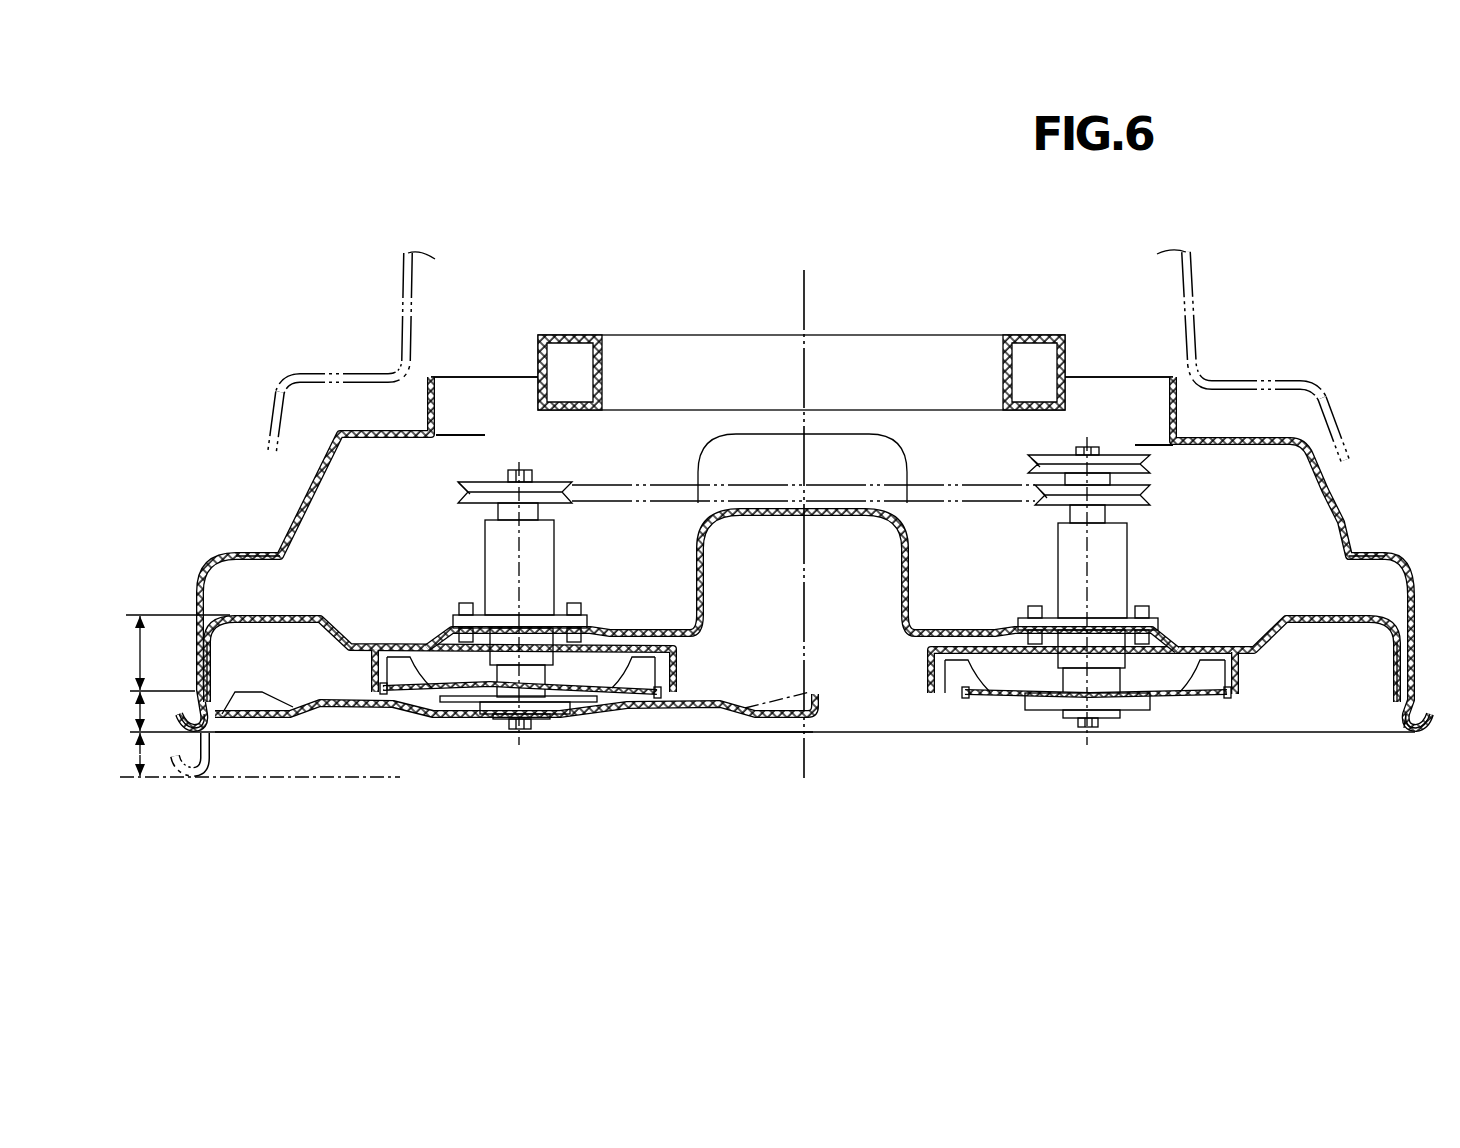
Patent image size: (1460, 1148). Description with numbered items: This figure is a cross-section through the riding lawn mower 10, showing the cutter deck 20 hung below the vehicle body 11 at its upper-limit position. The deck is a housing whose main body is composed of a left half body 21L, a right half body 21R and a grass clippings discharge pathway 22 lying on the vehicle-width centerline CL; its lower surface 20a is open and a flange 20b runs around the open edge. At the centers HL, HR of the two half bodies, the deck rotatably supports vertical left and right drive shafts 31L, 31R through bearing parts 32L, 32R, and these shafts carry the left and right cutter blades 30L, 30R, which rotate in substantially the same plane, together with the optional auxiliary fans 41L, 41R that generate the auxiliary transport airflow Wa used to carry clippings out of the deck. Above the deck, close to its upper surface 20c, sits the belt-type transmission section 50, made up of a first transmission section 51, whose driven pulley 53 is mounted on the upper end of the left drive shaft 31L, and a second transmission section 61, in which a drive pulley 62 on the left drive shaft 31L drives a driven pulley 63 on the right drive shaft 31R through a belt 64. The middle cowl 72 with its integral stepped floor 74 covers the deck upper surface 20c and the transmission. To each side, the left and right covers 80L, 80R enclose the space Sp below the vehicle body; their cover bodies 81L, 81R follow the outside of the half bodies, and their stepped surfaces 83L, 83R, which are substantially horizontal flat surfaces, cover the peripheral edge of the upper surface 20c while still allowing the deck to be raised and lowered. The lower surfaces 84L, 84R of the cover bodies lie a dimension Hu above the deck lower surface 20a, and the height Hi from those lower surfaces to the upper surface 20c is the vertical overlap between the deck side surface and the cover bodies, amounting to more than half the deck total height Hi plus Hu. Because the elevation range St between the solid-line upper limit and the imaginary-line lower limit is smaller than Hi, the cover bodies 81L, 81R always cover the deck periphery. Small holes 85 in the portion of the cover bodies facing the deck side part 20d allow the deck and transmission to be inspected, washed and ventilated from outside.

The riding lawn mower 10 is at (548, 168).
The vehicle body 11 is at (577, 332).
The cutter deck 20 is at (178, 778).
The lower surface 20a is at (363, 735).
The flange 20b is at (167, 737).
The upper surface 20c is at (290, 615).
The side part 20d is at (217, 688).
The right half body 21R is at (617, 612).
The left half body 21L is at (955, 612).
The grass clippings discharge pathway 22 is at (823, 458).
The right cutter blade 30R is at (752, 716).
The left cutter blade 30L is at (1055, 710).
The right drive shaft 31R is at (497, 508).
The left drive shaft 31L is at (1108, 510).
The right bearing part 32R is at (495, 550).
The left bearing part 32L is at (1120, 585).
The right auxiliary fan 41R is at (637, 700).
The left auxiliary fan 41L is at (978, 700).
The transmission section 50 is at (1256, 463).
The first transmission section 51 is at (1157, 462).
The driven pulley 53 is at (1054, 451).
The second transmission section 61 is at (1158, 497).
The drive pulley 62 is at (1035, 492).
The driven pulley 63 is at (463, 483).
The belt 64 is at (748, 485).
The middle cowl 72 is at (400, 287).
The stepped floor 74 is at (320, 375).
The right cover 80R is at (246, 369).
The left cover 80L is at (1340, 392).
The right cover body 81R is at (322, 455).
The left cover body 81L is at (1292, 430).
The right stepped surface 83R is at (250, 557).
The left stepped surface 83L is at (1367, 553).
The lower surface of right cover body 84R is at (205, 735).
The lower surface of left cover body 84L is at (1400, 735).
The small holes 85 is at (292, 513).
The center of right half body HR is at (520, 574).
The center of left half body HL is at (1088, 574).
The space Sp is at (542, 427).
The auxiliary transport airflow Wa is at (690, 682).
The centerline CL is at (805, 778).
The height Hi is at (140, 652).
The dimension Hu is at (145, 711).
The elevation range St is at (140, 757).